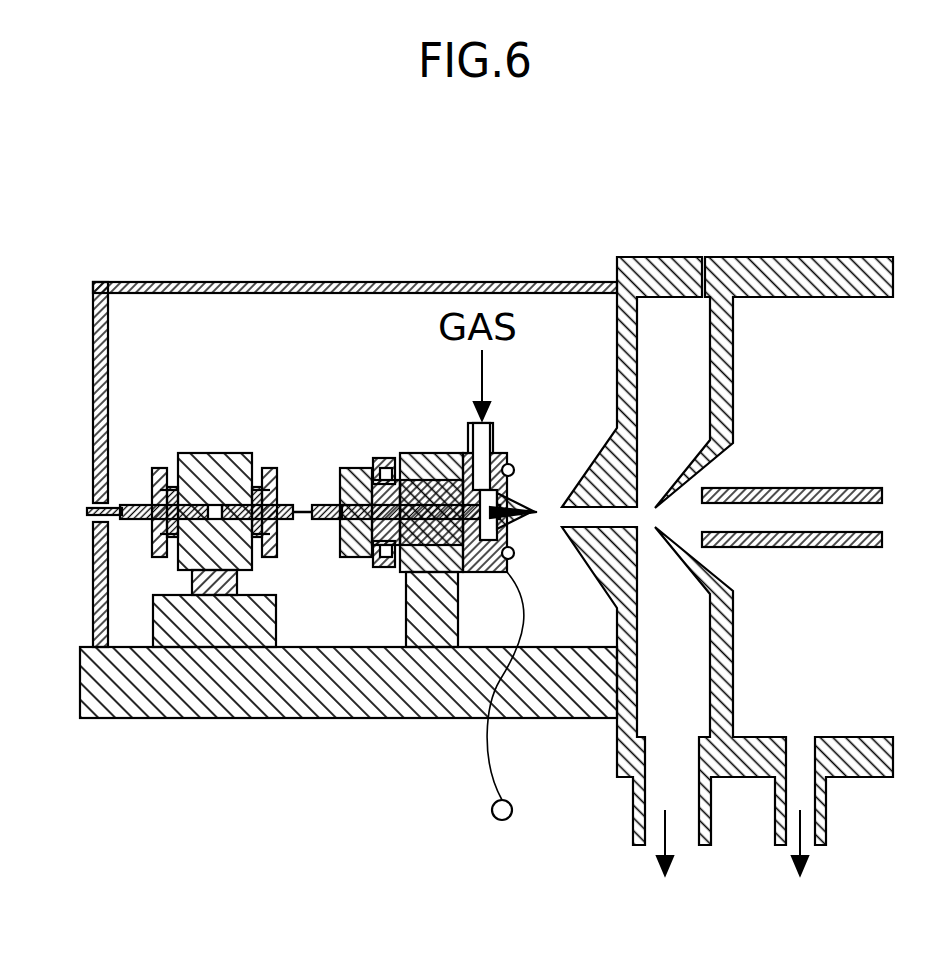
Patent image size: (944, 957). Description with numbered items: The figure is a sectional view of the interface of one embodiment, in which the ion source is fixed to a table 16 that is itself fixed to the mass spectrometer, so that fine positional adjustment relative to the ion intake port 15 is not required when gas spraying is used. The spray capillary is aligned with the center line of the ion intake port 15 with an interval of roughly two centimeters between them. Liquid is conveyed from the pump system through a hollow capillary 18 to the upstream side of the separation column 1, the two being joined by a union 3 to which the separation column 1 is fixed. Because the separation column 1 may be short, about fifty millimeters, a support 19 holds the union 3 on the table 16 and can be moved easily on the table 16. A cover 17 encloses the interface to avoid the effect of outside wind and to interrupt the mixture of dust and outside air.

The separation column 1 is at (300, 505).
The union 3 is at (220, 452).
The ion intake port 15 is at (553, 516).
The table 16 is at (420, 648).
The cover 17 is at (357, 282).
The hollow capillary 18 is at (117, 500).
The support 19 is at (277, 628).